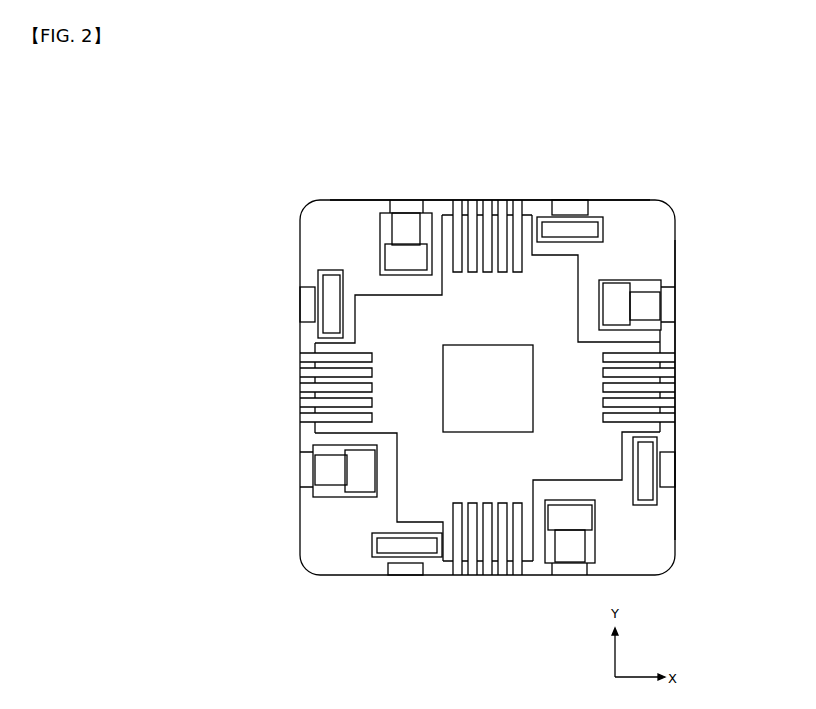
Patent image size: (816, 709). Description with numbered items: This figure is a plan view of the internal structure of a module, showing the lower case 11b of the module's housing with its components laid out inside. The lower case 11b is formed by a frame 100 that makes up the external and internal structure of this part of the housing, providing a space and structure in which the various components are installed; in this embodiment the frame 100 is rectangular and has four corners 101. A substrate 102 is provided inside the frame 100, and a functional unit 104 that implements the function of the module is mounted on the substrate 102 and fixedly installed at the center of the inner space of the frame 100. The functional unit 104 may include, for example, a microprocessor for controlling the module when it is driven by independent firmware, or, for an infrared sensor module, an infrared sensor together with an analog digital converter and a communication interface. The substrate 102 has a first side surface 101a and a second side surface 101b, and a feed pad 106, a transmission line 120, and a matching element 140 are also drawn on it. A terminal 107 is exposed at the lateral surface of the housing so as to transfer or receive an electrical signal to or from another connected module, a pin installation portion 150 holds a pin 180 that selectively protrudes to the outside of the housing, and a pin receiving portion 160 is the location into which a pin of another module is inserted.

The frame 100 is at (522, 355).
The corners 101 is at (648, 220).
The first side surface of substrate 101a is at (677, 230).
The second side surface of substrate 101b is at (628, 199).
The lower case 11b is at (498, 128).
The substrate 102 is at (613, 463).
The functional unit 104 is at (525, 380).
The feed pad 106 is at (457, 545).
The terminal 107 is at (463, 576).
The transmission line 120 is at (536, 226).
The matching element 140 is at (538, 222).
The pin installation portion 150 is at (650, 278).
The pin receiving portion 160 is at (588, 206).
The pin 180 is at (640, 303).